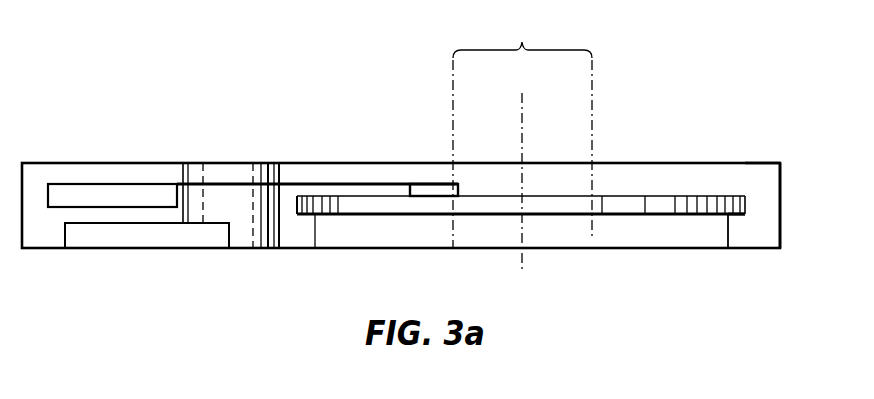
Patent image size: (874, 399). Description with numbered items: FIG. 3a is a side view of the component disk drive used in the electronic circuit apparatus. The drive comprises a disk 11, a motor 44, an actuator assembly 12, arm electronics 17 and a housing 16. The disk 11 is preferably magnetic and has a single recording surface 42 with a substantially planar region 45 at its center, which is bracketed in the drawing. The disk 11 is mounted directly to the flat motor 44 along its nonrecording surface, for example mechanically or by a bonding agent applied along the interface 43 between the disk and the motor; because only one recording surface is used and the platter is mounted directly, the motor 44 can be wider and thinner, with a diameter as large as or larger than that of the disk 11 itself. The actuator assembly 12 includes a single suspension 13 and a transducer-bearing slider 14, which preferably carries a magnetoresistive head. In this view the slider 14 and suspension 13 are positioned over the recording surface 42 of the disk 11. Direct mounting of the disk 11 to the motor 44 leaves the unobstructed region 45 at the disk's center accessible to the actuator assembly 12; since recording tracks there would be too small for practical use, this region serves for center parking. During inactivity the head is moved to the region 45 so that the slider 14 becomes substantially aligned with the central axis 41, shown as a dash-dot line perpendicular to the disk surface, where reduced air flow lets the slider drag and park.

The disk 11 is at (746, 192).
The actuator assembly 12 is at (228, 147).
The suspension 13 is at (340, 184).
The transducer-bearing slider 14 is at (435, 190).
The housing 16 is at (732, 163).
The arm electronics 17 is at (147, 243).
The central axis 41 is at (523, 115).
The recording surface 42 is at (630, 196).
The interface 43 is at (741, 216).
The motor 44 is at (724, 236).
The planar region 45 is at (522, 130).